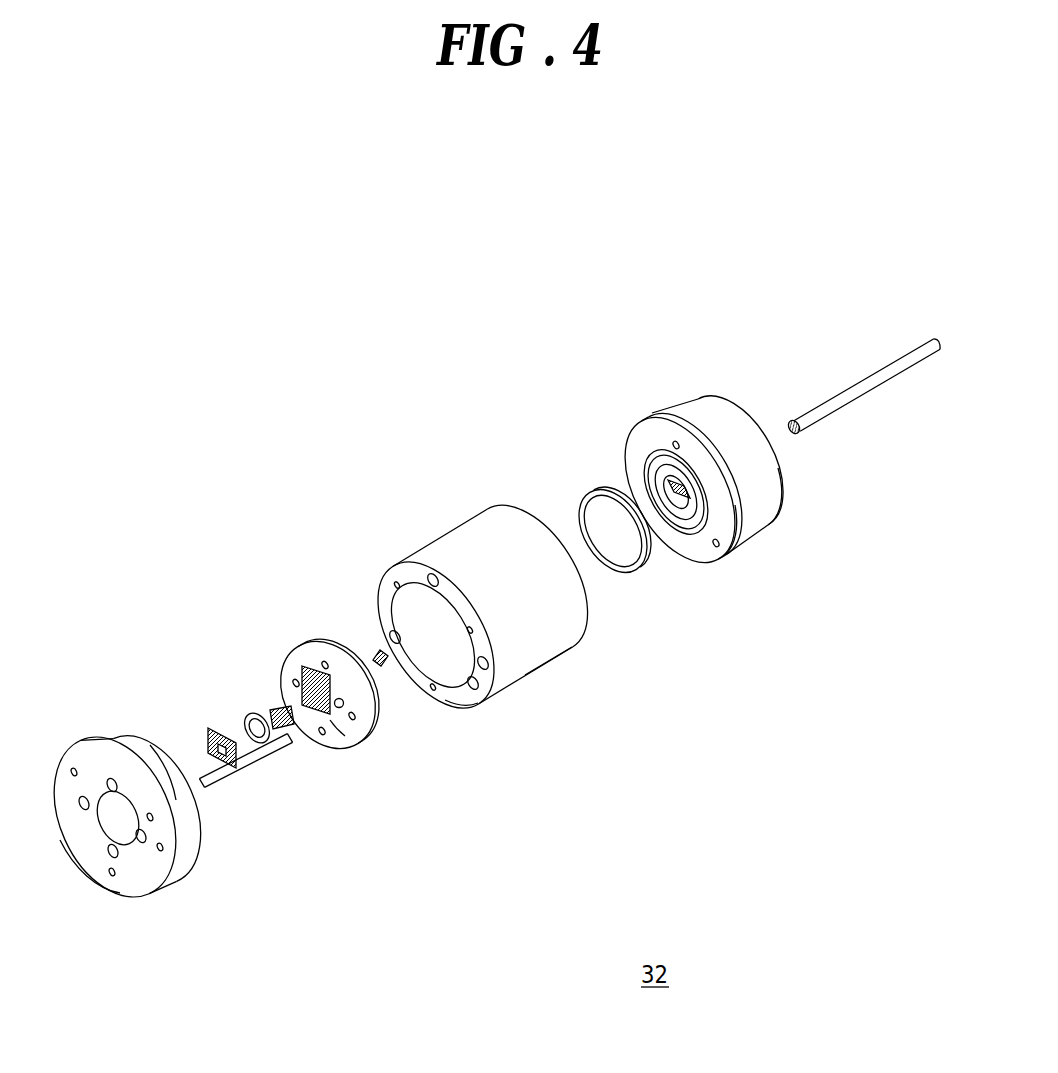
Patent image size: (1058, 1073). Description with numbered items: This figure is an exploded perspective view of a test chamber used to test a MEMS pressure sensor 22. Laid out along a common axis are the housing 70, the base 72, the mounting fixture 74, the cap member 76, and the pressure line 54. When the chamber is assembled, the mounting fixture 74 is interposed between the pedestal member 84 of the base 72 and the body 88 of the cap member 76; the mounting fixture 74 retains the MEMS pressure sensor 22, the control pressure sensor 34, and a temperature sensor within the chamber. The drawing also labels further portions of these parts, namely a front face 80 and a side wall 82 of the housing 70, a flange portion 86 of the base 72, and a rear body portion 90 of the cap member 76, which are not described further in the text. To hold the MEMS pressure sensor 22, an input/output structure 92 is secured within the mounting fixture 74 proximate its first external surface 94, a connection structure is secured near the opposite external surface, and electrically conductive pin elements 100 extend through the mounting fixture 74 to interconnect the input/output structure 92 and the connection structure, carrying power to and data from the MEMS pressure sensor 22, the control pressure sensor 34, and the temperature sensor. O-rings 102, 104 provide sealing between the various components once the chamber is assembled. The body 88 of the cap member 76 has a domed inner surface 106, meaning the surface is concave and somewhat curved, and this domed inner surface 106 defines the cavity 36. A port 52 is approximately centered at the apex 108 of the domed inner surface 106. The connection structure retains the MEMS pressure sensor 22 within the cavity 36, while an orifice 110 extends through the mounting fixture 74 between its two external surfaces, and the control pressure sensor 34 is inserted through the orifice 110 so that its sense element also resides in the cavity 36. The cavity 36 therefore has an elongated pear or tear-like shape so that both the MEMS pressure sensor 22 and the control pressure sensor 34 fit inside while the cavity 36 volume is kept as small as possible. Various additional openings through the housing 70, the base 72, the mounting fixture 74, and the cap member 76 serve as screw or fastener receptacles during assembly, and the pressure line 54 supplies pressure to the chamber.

The MEMS pressure sensor 22 is at (382, 668).
The control pressure sensor 34 is at (285, 740).
The cavity 36 is at (681, 502).
The port 52 is at (678, 495).
The pressure line 54 is at (857, 383).
The housing 70 is at (438, 540).
The base 72 is at (75, 748).
The mounting fixture 74 is at (312, 647).
The cap member 76 is at (675, 418).
The housing front face 80 is at (468, 698).
The housing side wall 82 is at (573, 632).
The pedestal member 84 is at (192, 810).
The flange face 86 is at (135, 878).
The body 88 is at (743, 528).
The hub body 90 is at (780, 502).
The input/output (I/O) structure 92 is at (217, 732).
The first external surface 94 is at (338, 728).
The electrically conductive pin elements 100 is at (278, 708).
The O-ring 102 is at (248, 715).
The O-ring 104 is at (600, 560).
The domed inner surface 106 is at (663, 492).
The apex 108 is at (688, 487).
The orifice 110 is at (337, 700).